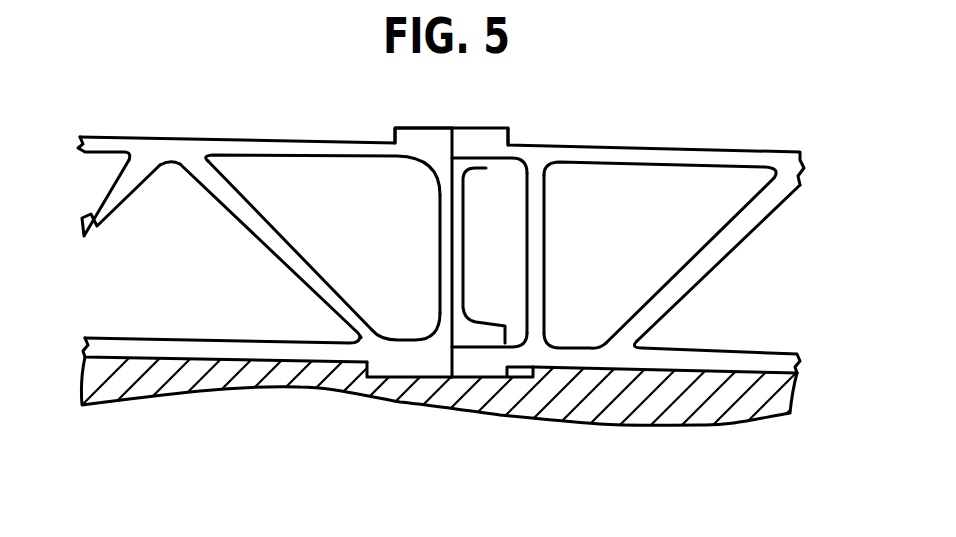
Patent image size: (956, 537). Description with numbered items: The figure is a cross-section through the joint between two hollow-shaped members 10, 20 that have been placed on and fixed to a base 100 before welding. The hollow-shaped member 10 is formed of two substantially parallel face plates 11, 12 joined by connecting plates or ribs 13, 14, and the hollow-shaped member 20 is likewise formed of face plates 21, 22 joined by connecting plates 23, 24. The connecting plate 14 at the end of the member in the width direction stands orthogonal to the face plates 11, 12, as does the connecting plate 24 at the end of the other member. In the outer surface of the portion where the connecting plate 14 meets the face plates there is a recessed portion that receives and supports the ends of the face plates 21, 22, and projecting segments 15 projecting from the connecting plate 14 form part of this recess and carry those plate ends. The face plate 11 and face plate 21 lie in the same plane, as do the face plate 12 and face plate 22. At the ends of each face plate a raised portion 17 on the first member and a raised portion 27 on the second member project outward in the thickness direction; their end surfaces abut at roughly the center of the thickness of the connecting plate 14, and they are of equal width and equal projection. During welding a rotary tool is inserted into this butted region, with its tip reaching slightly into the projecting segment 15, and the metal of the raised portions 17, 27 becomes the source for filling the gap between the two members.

The hollow-shaped member 10 is at (150, 111).
The face plate 11 is at (276, 140).
The face plate 12 is at (170, 340).
The connecting plate 13 is at (92, 216).
The connecting plate 14 is at (442, 238).
The projecting segment 15 is at (484, 170).
The raised portion 17 is at (416, 128).
The hollow-shaped member 20 is at (703, 126).
The face plate 21 is at (648, 145).
The face plate 22 is at (713, 358).
The connecting plate 23 is at (733, 243).
The connecting plate 24 is at (531, 248).
The raised portion 27 is at (488, 128).
The base 100 is at (615, 423).